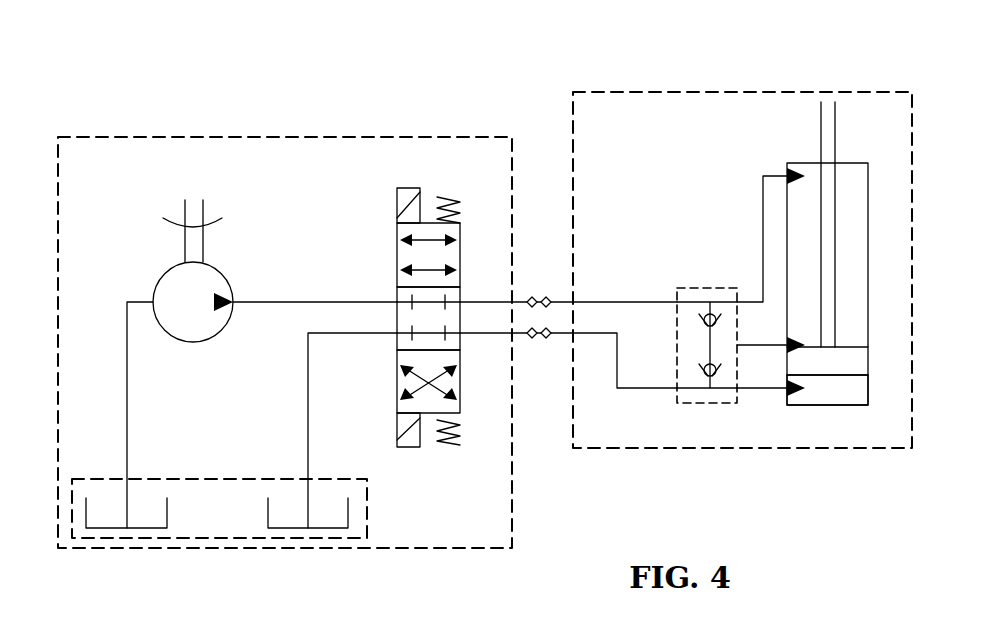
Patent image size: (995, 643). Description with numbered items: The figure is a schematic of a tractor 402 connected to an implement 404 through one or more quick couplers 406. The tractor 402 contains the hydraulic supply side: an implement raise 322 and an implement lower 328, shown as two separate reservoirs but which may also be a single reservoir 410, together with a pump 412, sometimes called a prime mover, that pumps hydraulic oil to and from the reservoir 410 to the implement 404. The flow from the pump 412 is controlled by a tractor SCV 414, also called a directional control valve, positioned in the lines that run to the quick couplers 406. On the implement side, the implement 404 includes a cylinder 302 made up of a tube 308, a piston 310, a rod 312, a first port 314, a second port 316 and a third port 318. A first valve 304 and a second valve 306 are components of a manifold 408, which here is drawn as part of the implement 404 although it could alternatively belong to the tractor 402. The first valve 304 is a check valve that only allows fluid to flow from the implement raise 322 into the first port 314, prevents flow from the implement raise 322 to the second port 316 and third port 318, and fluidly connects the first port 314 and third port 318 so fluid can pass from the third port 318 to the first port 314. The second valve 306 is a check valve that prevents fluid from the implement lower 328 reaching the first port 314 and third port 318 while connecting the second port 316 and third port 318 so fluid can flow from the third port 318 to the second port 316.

The cylinder 302 is at (846, 271).
The first valve 304 is at (704, 316).
The second valve 306 is at (704, 376).
The tube 308 is at (868, 393).
The piston 310 is at (850, 366).
The rod 312 is at (828, 245).
The first port 314 is at (783, 177).
The second port 316 is at (789, 392).
The third port 318 is at (785, 343).
The implement raise 322 is at (110, 530).
The implement lower 328 is at (328, 530).
The tractor 402 is at (500, 135).
The implement 404 is at (655, 91).
The quick couplers 406 is at (538, 285).
The manifold 408 is at (717, 405).
The reservoir 410 is at (225, 540).
The pump 412 is at (221, 197).
The tractor SCV 414 is at (371, 207).